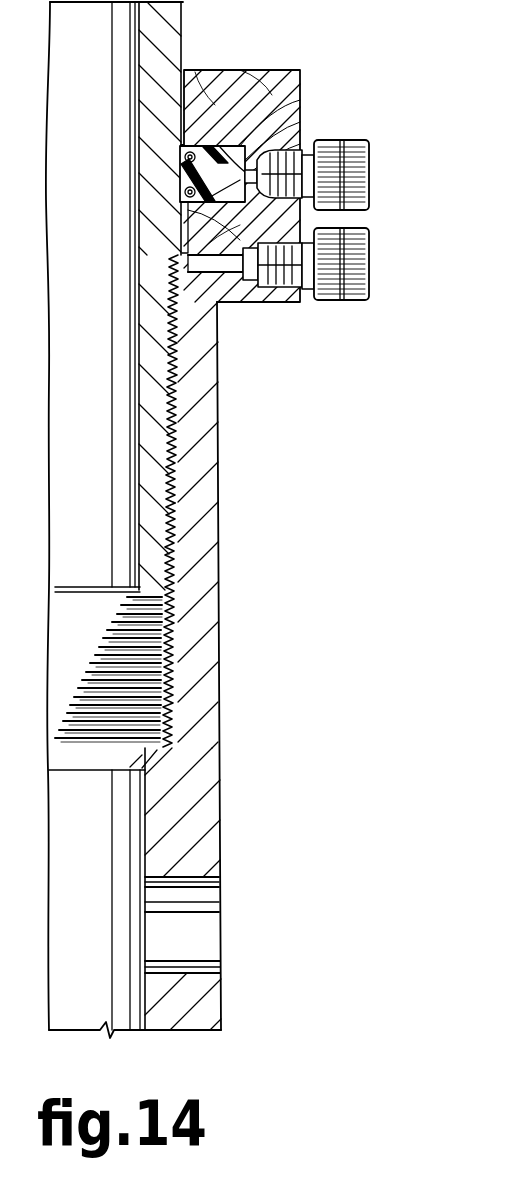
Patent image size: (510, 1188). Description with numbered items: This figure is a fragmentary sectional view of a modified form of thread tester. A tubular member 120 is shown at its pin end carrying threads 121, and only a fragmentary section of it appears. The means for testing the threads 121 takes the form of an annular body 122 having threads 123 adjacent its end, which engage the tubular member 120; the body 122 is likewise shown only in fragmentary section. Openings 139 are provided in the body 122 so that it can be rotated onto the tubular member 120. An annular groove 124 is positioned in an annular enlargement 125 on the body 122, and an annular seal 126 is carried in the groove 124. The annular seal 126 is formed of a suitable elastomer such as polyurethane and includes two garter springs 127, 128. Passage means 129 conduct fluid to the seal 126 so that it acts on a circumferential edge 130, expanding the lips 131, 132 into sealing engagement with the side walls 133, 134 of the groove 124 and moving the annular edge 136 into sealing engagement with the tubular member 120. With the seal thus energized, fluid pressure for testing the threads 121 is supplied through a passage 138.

The tubular member 120 is at (138, 373).
The threads 121 is at (172, 460).
The annular body 122 is at (203, 408).
The threads 123 is at (172, 518).
The annular groove 124 is at (290, 150).
The annular enlargement 125 is at (293, 90).
The annular seal 126 is at (258, 78).
The garter spring 127 is at (203, 90).
The garter spring 128 is at (183, 192).
The passage means 129 is at (205, 225).
The circumferential edge 130 is at (183, 168).
The lip 131 is at (268, 130).
The lip 132 is at (240, 203).
The side wall 133 is at (247, 147).
The side wall 134 is at (183, 233).
The annular edge 136 is at (183, 182).
The passage 138 is at (224, 265).
The openings 139 is at (190, 880).